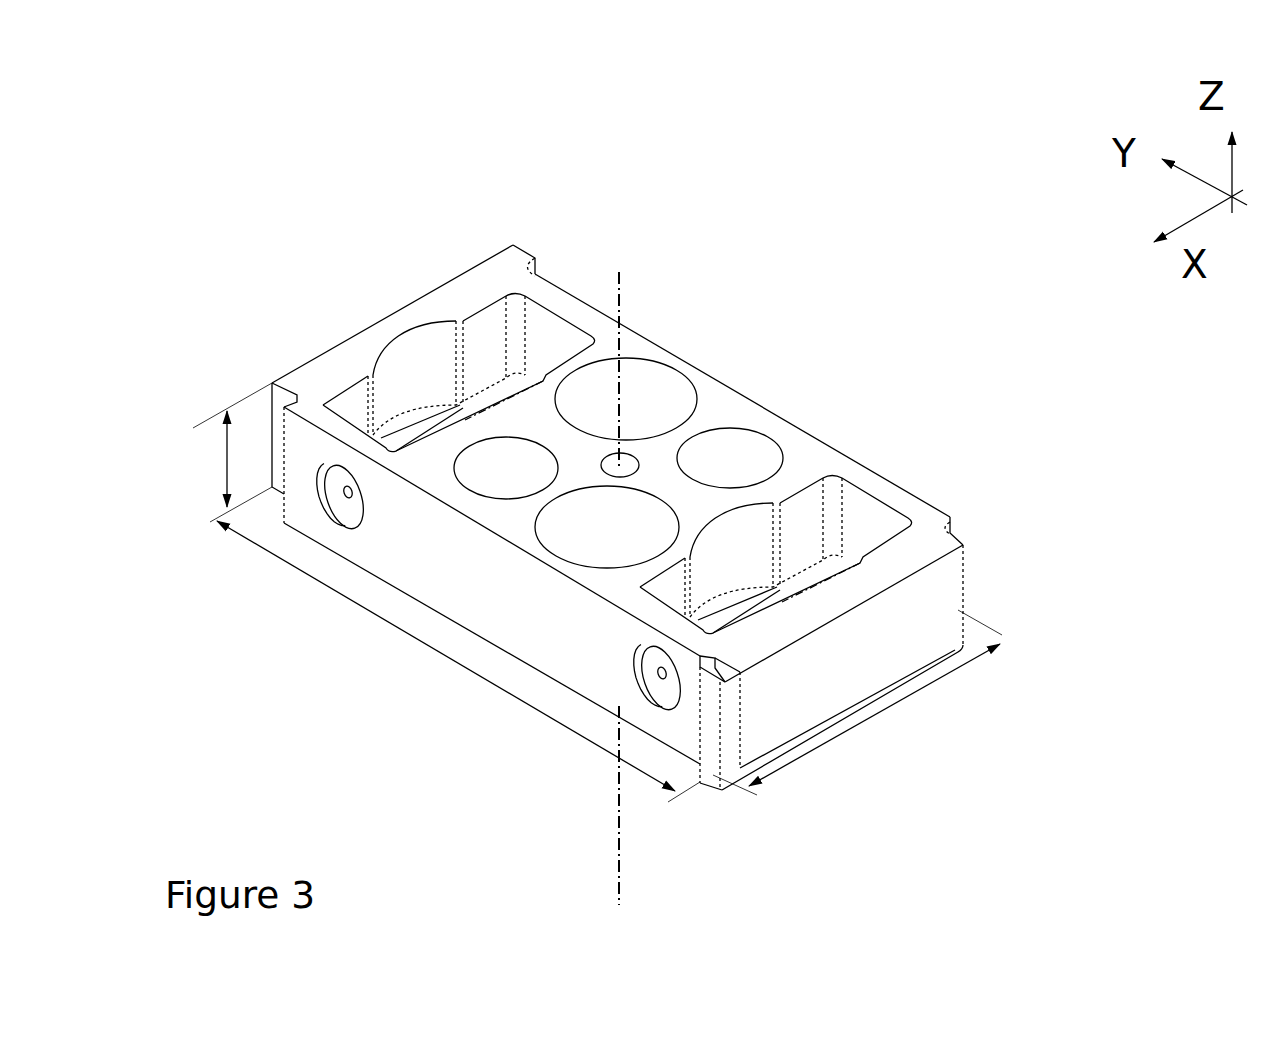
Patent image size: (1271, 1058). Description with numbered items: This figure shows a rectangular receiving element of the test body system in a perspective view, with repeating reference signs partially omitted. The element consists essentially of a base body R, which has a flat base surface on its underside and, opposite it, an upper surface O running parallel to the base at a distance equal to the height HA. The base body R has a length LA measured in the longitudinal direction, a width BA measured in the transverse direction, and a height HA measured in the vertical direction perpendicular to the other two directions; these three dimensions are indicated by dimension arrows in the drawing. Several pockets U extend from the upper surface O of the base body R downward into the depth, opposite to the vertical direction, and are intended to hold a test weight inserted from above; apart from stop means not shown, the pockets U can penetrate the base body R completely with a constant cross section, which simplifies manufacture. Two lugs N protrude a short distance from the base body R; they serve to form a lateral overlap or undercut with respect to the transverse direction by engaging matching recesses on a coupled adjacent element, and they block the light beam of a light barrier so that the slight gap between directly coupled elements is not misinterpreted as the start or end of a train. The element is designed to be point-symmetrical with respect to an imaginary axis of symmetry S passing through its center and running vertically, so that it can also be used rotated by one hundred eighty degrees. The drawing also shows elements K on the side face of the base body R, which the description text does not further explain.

The base body R is at (502, 588).
The lugs N is at (516, 246).
The pockets U is at (498, 458).
The upper surface O is at (803, 460).
The coupling boss K is at (312, 516).
The height HA is at (223, 467).
The width BA is at (393, 655).
The length LA is at (857, 702).
The axis of symmetry S is at (603, 825).